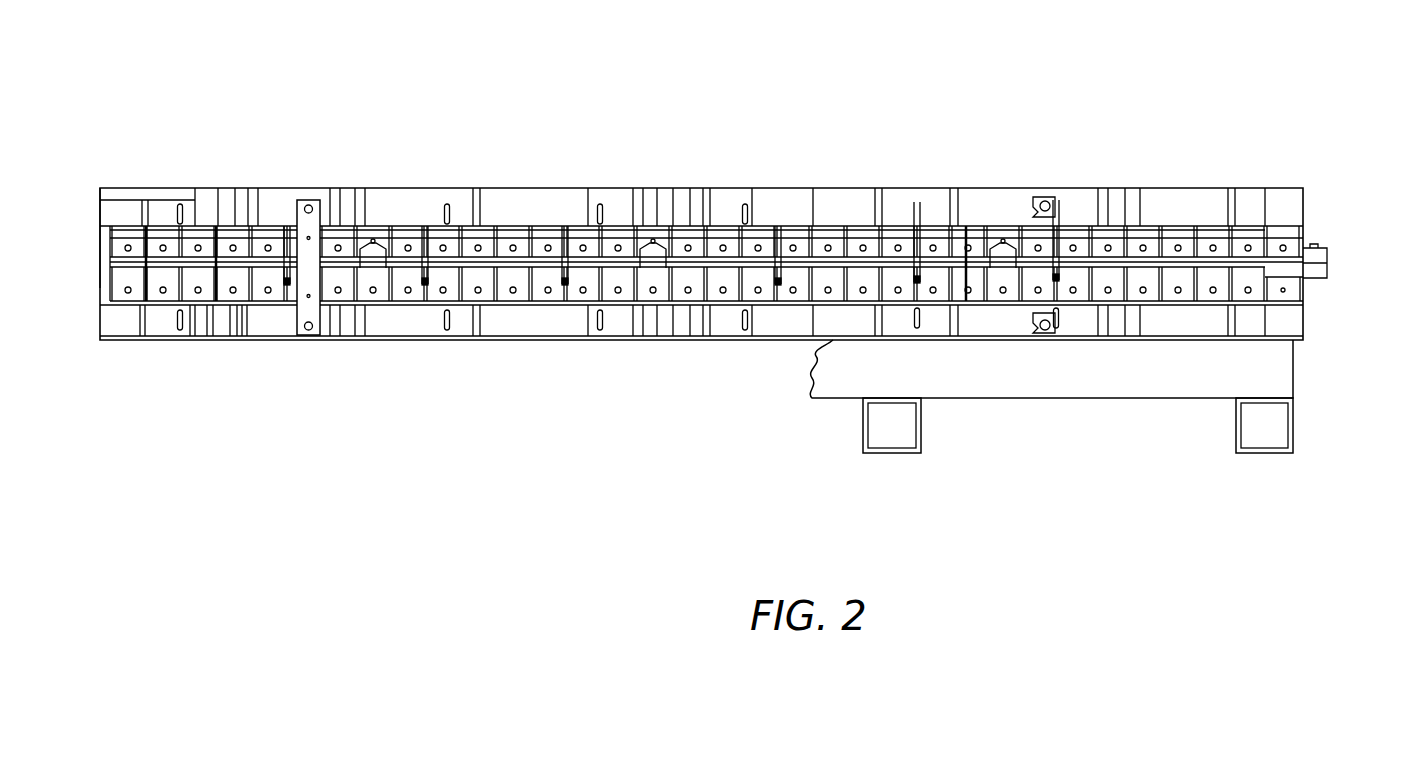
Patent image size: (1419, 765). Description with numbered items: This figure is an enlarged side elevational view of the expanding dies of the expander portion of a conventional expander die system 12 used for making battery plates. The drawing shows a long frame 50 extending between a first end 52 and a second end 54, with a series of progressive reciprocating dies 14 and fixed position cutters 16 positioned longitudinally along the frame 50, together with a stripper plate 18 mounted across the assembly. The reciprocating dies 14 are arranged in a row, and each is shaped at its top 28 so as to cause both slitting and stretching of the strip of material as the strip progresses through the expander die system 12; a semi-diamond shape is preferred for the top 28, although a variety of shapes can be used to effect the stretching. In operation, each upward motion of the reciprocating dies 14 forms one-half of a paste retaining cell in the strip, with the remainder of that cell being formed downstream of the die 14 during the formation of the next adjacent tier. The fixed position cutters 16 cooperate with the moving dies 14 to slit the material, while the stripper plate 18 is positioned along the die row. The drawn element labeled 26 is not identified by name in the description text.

The expander die system 12 is at (803, 98).
The reciprocating dies 14 is at (408, 296).
The fixed position cutters 16 is at (268, 230).
The stripper plate 18 is at (302, 335).
The lower rail 26 is at (150, 302).
The top of reciprocating dies 28 is at (205, 267).
The frame 50 is at (620, 188).
The first end 52 is at (1304, 212).
The second end 54 is at (108, 215).